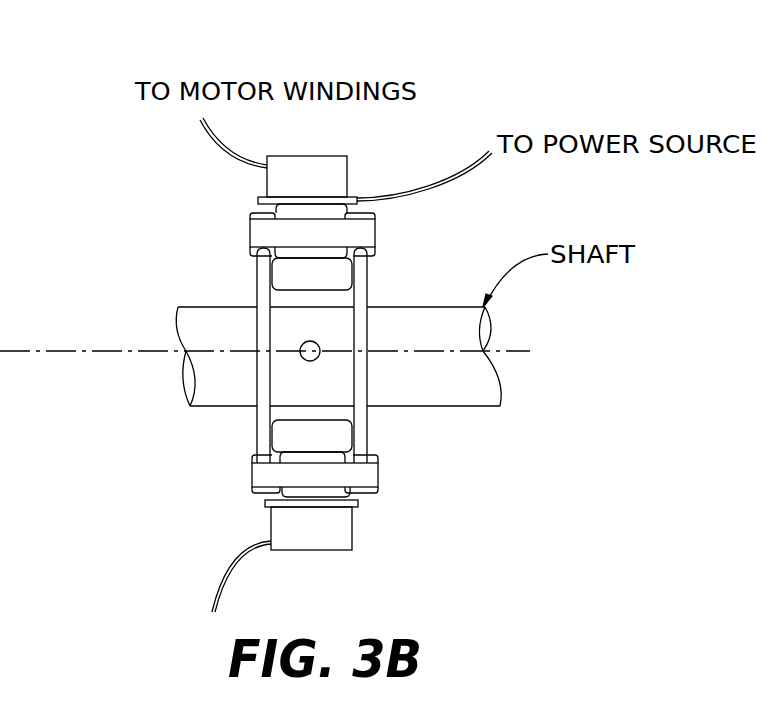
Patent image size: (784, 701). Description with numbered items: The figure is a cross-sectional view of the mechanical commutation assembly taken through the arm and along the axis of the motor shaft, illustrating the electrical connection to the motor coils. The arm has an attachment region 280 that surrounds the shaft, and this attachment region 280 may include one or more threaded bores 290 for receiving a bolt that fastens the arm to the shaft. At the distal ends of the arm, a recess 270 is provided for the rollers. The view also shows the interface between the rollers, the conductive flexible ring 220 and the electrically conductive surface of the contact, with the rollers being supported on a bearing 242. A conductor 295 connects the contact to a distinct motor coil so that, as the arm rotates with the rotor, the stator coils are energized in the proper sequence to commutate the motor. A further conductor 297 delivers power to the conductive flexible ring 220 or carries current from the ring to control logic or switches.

The conductive flexible ring 220 is at (358, 199).
The bearing 242 is at (353, 492).
The recess 270 is at (343, 277).
The attachment region 280 is at (337, 322).
The threaded bore 290 is at (310, 361).
The conductor 295 is at (223, 148).
The conductor 297 is at (457, 187).